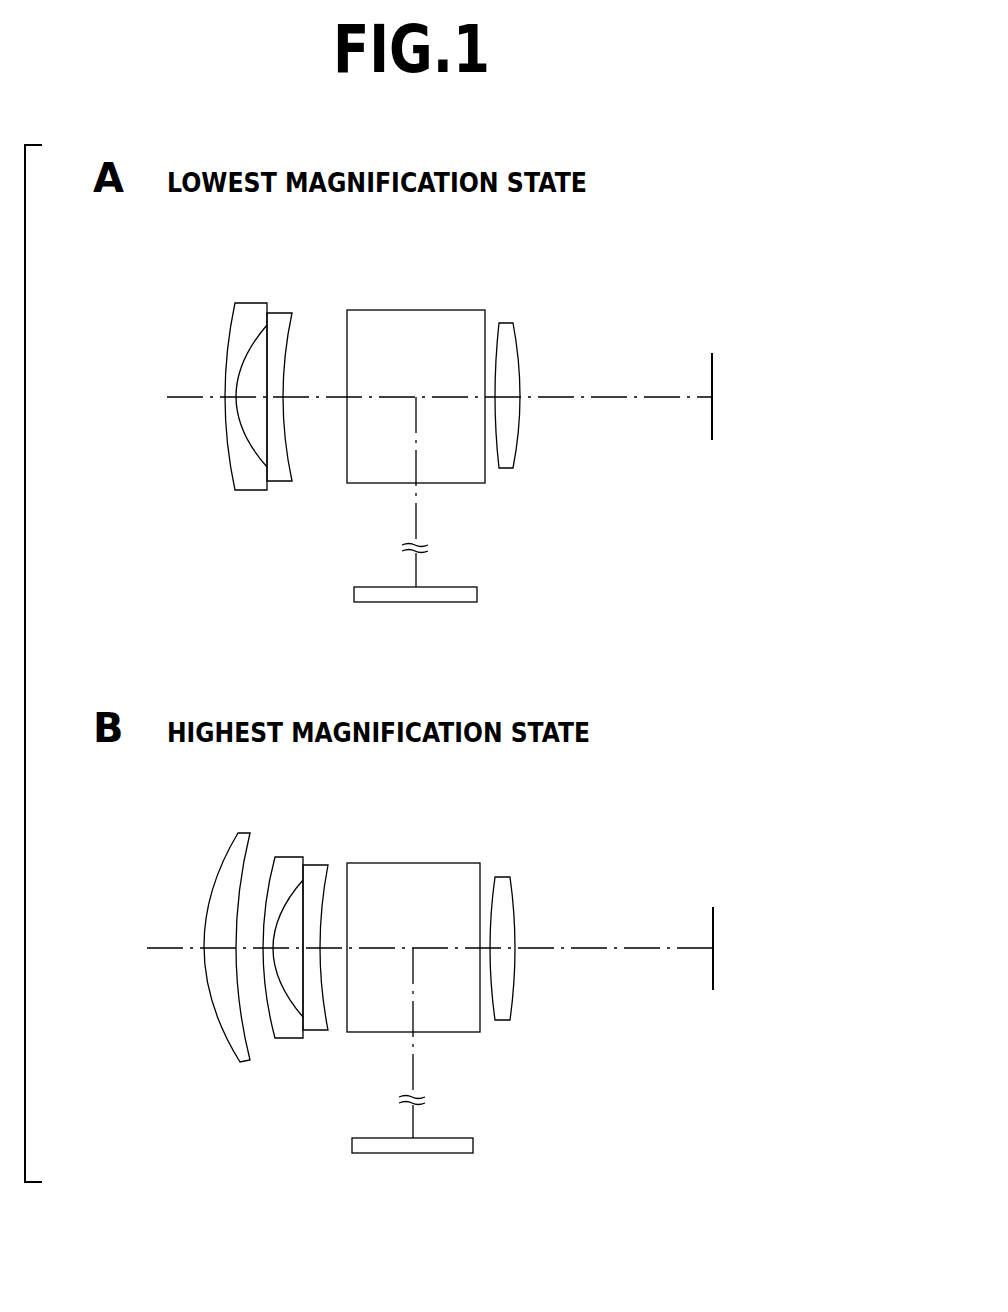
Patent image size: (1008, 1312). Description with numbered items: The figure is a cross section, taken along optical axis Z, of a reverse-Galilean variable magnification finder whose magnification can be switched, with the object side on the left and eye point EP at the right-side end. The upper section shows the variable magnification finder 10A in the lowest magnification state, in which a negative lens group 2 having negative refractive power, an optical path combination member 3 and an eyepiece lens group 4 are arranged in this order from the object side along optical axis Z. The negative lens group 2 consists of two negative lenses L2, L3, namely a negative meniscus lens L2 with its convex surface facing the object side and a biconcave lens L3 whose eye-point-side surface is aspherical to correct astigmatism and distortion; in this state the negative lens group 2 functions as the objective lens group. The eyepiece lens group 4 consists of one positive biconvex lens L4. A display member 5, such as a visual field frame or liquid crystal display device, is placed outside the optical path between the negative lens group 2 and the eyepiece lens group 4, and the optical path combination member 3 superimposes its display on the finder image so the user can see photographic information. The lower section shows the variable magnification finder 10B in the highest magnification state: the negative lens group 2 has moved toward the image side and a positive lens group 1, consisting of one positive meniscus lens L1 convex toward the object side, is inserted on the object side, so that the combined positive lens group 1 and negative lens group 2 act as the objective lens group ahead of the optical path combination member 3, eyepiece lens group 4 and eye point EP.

The positive lens group 1 is at (224, 949).
The negative lens group 2 is at (283, 673).
The optical path combination member 3 is at (418, 306).
The eyepiece lens group 4 is at (516, 673).
The display member 5 is at (477, 595).
The variable magnification finder 10A is at (618, 251).
The variable magnification finder 10B is at (613, 803).
The eye point EP is at (716, 363).
The optical axis Z is at (180, 395).
The positive lens L1 is at (233, 1042).
The negative lens L2 is at (250, 487).
The negative lens L3 is at (277, 475).
The positive lens L4 is at (507, 470).